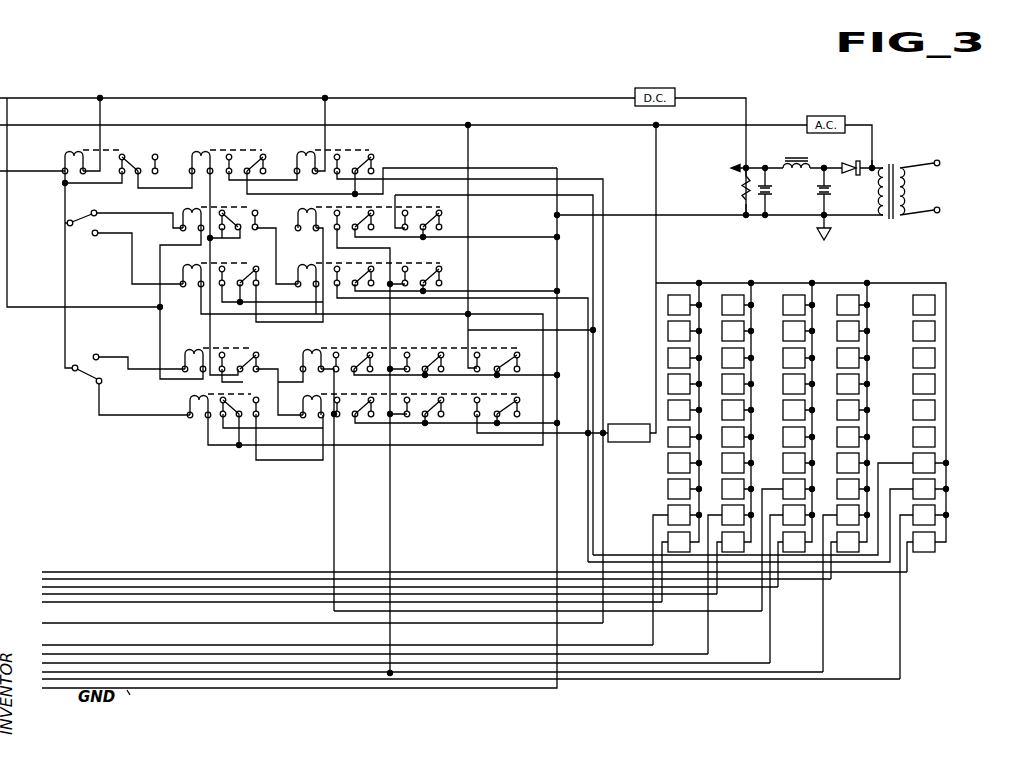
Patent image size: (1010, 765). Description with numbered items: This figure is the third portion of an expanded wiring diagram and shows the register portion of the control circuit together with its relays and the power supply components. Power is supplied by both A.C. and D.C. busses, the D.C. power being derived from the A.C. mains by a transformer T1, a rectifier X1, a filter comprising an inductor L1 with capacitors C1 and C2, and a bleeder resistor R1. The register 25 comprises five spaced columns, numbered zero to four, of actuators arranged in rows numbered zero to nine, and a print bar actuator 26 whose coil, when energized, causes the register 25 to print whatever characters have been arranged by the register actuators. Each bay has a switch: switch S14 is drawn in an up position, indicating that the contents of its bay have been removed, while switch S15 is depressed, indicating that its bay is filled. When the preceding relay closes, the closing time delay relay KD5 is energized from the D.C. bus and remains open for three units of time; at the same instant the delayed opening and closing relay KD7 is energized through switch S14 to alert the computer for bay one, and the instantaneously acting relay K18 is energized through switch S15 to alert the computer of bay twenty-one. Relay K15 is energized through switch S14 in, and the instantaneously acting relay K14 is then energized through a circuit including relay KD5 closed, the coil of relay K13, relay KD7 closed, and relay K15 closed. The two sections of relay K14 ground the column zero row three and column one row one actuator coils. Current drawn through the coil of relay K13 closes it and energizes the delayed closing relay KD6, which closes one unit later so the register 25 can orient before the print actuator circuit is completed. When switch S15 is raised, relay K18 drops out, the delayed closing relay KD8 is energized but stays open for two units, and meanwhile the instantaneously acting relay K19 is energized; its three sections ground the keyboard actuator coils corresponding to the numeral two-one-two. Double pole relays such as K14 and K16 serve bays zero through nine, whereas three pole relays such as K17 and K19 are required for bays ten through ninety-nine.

The register 25 is at (852, 276).
The print bar actuator 26 is at (632, 444).
The closing time delay relay KD5 is at (105, 151).
The instantaneously acting relay K13 is at (227, 151).
The delayed closing relay KD6 is at (334, 151).
The delayed opening and closing relay KD7 is at (219, 210).
The instantaneously acting relay K14 is at (356, 210).
The instantaneous closing and opening relay K15 is at (209, 266).
The double pole double throw relay K16 is at (365, 265).
The delayed closing relay KD8 is at (220, 349).
The three pole double throw relay K17 is at (409, 349).
The instantaneously acting relay K18 is at (212, 401).
The instantaneously acting relay K19 is at (405, 397).
The switch S14 is at (64, 223).
The switch S15 is at (66, 369).
The resistor R1 is at (733, 188).
The capacitor C1 is at (773, 193).
The capacitor C2 is at (833, 193).
The inductor L1 is at (796, 152).
The rectifier X1 is at (850, 158).
The transformer T1 is at (909, 185).